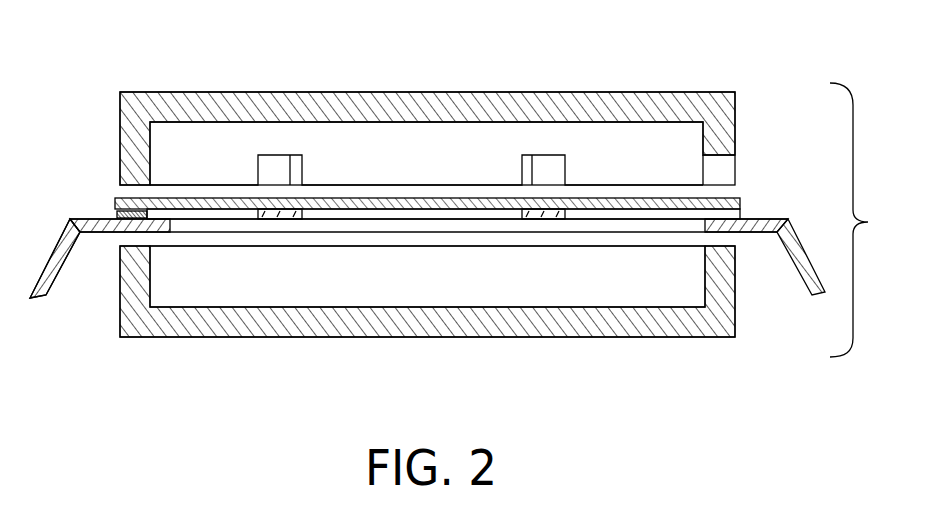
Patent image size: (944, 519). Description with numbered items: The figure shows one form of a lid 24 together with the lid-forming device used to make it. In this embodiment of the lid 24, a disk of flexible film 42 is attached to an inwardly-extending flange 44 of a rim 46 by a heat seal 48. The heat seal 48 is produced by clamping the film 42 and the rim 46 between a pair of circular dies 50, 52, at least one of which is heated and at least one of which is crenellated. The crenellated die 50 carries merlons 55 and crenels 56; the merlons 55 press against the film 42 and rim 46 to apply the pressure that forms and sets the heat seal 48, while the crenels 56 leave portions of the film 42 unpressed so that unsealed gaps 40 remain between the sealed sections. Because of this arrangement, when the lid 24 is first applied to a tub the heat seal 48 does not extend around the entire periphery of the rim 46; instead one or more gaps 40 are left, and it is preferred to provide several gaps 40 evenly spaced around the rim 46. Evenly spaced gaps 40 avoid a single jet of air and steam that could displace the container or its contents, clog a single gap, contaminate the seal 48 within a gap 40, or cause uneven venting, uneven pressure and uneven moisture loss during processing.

The lid 24 is at (62, 244).
The gaps 40 is at (282, 213).
The flexible film 42 is at (405, 213).
The inwardly-extending flange 44 is at (758, 233).
The rim 46 is at (48, 285).
The heat seal 48 is at (117, 215).
The crenellated die 50 is at (152, 108).
The circular die 52 is at (172, 323).
The merlons 55 is at (224, 146).
The crenels 56 is at (548, 164).